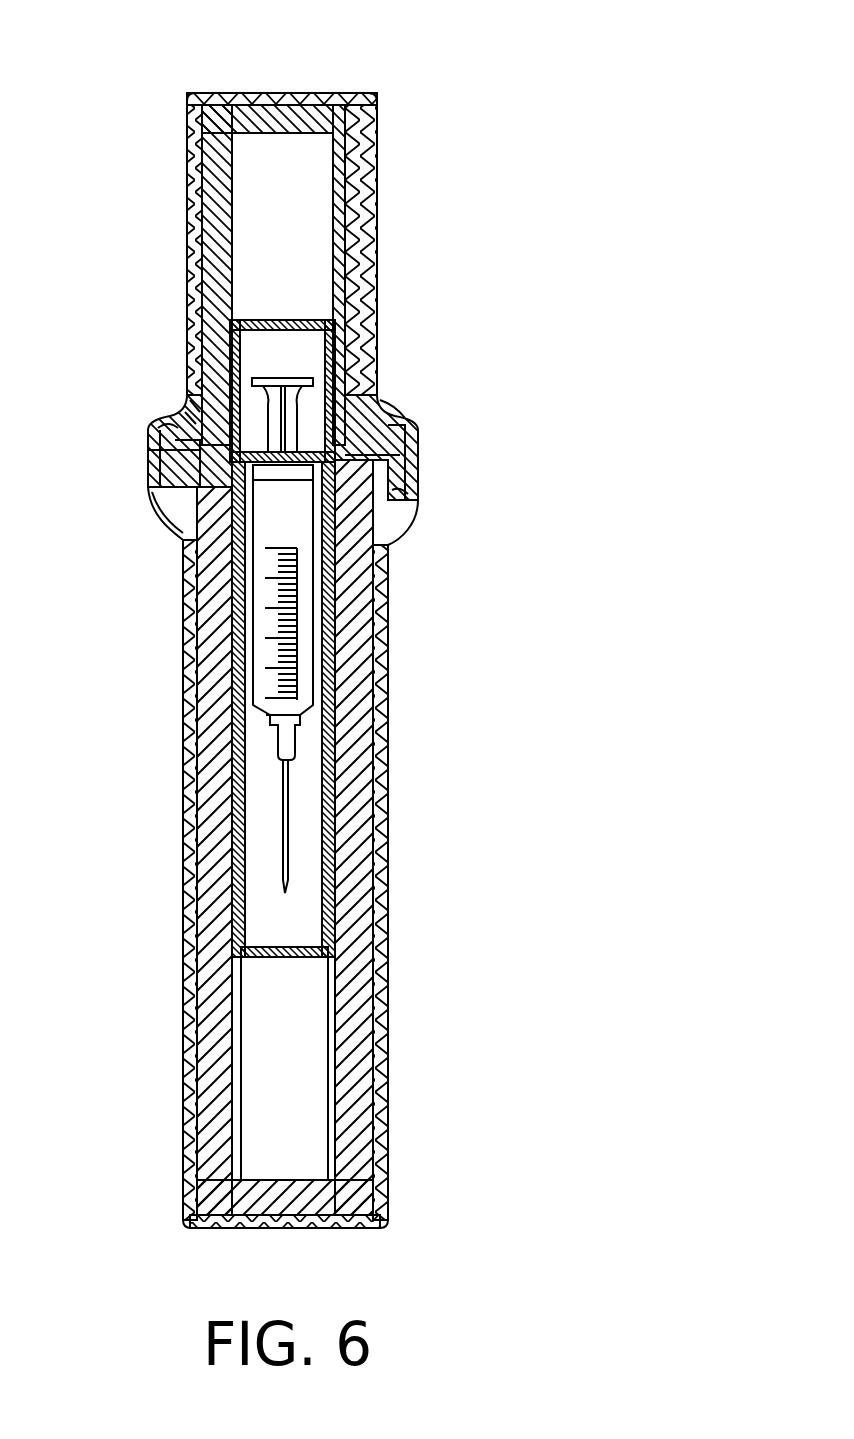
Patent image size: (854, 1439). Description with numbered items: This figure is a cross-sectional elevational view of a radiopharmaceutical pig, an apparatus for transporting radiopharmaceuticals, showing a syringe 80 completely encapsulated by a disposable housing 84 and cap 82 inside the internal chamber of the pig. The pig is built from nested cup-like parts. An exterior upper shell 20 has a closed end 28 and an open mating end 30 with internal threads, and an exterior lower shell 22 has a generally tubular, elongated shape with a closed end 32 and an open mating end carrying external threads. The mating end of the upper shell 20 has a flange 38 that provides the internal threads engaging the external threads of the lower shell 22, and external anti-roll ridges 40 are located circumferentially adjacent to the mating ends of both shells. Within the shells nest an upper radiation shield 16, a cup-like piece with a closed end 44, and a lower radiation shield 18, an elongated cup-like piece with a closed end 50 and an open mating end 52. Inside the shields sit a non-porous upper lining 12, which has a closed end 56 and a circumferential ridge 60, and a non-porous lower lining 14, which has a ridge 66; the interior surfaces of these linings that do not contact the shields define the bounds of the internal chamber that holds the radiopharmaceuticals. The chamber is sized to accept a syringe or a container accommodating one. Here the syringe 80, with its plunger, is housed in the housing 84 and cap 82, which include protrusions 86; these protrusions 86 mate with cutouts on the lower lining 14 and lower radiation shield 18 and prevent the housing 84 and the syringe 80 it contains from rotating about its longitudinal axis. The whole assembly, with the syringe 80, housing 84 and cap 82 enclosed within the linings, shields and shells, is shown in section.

The upper lining 12 is at (348, 262).
The lower lining 14 is at (289, 368).
The upper radiation shield 16 is at (215, 268).
The lower radiation shield 18 is at (212, 905).
The upper exterior shell 20 is at (388, 180).
The lower exterior shell 22 is at (187, 1070).
The closed end 28 is at (307, 92).
The open mating end 30 is at (148, 455).
The closed end 32 is at (178, 1256).
The flange 38 is at (150, 445).
The anti-roll ridges 40 is at (170, 508).
The closed end 44 is at (335, 95).
The closed end 50 is at (305, 1229).
The open mating end 52 is at (405, 458).
The closed end 56 is at (264, 132).
The circumferential ridge 60 is at (385, 400).
The ridge 66 is at (190, 398).
The syringe 80 is at (290, 852).
The cap 82 is at (312, 318).
The housing 84 is at (283, 960).
The protrusions 86 is at (152, 425).